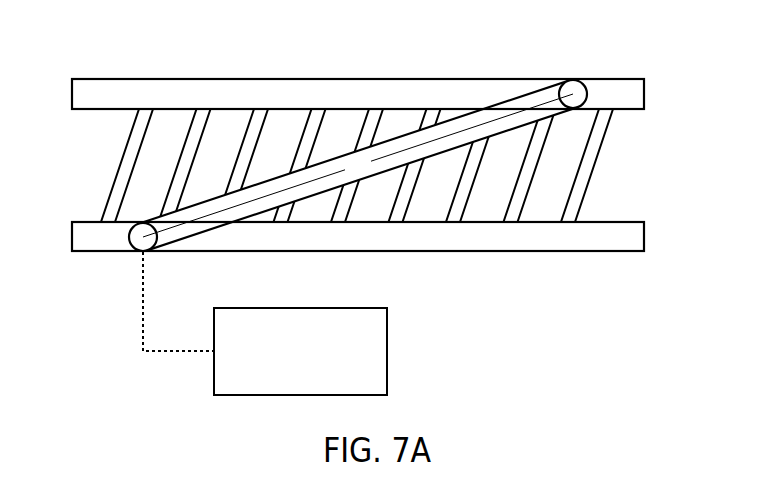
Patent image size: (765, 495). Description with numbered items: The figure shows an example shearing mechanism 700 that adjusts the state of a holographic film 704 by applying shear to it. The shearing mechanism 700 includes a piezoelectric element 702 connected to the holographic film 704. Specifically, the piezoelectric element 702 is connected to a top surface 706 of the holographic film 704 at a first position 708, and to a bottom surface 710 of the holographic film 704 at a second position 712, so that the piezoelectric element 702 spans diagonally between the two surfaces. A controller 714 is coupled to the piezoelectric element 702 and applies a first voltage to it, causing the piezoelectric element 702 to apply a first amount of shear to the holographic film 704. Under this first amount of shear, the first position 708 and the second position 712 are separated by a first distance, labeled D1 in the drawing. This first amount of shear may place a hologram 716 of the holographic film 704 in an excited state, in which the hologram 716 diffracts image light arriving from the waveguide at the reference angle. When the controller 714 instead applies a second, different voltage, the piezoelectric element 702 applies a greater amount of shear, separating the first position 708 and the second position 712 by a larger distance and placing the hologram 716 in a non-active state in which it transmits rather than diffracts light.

The shearing mechanism 700 is at (103, 166).
The piezoelectric element 702 is at (398, 136).
The holographic film 704 is at (373, 138).
The top surface 706 is at (617, 79).
The first position 708 is at (575, 80).
The bottom surface 710 is at (530, 252).
The second position 712 is at (140, 253).
The controller 714 is at (265, 323).
The hologram 716 is at (642, 157).